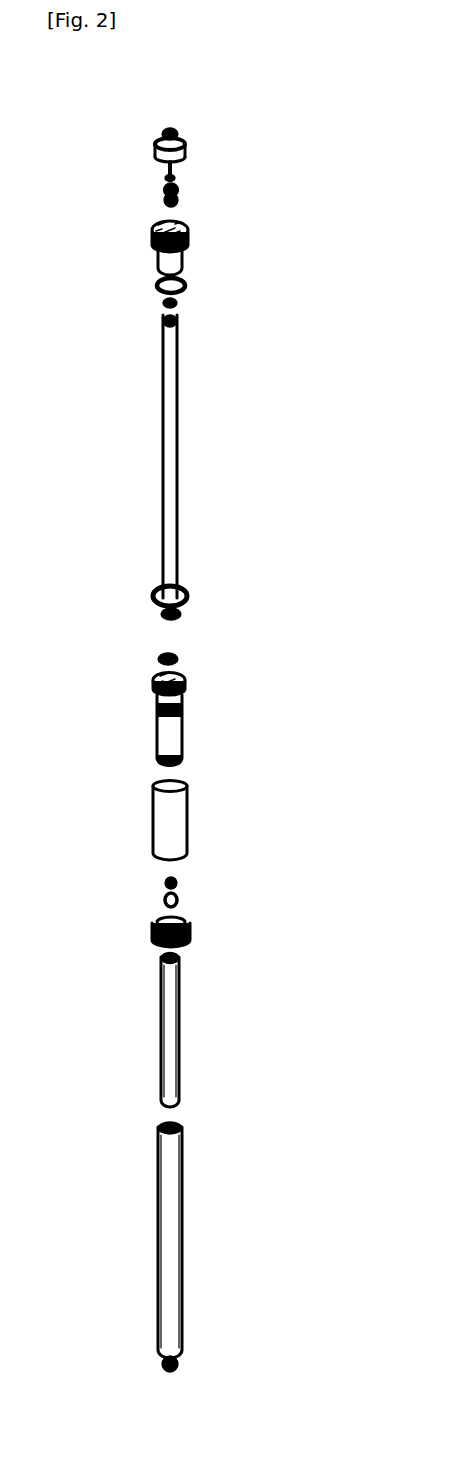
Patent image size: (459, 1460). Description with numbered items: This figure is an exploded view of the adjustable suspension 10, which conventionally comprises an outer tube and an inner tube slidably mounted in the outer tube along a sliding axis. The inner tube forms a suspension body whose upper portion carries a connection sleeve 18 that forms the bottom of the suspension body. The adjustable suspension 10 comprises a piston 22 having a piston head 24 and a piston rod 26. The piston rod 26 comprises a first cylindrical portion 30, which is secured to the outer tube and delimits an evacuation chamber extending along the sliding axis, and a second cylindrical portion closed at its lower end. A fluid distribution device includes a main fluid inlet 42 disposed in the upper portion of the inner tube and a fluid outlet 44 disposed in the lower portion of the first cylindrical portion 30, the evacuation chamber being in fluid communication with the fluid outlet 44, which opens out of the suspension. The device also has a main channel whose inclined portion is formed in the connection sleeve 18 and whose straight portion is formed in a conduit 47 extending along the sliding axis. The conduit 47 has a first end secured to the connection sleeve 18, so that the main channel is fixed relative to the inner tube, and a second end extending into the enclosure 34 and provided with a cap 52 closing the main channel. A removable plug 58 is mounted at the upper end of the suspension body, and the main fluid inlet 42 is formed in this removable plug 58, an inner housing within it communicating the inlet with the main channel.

The adjustable suspension 10 is at (243, 573).
The connection sleeve 18 is at (155, 230).
The piston 22 is at (143, 700).
The piston head 24 is at (181, 673).
The piston rod 26 is at (173, 722).
The first cylindrical portion 30 is at (172, 1242).
The enclosure 34 is at (170, 1030).
The main fluid inlet 42 is at (175, 129).
The fluid outlet 44 is at (178, 1364).
The conduit 47 is at (172, 418).
The cap 52 is at (178, 891).
The removable plug 58 is at (157, 143).